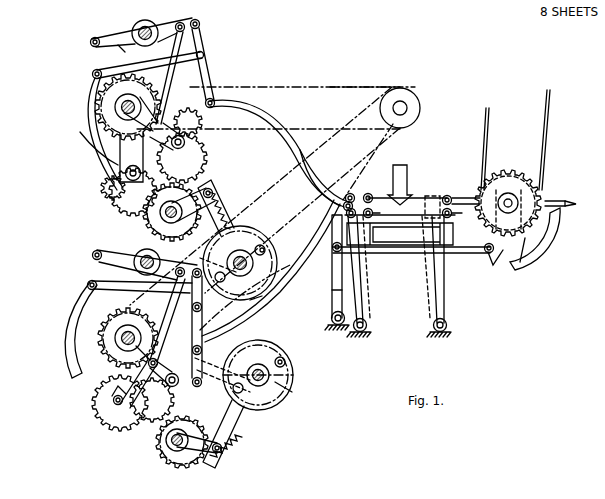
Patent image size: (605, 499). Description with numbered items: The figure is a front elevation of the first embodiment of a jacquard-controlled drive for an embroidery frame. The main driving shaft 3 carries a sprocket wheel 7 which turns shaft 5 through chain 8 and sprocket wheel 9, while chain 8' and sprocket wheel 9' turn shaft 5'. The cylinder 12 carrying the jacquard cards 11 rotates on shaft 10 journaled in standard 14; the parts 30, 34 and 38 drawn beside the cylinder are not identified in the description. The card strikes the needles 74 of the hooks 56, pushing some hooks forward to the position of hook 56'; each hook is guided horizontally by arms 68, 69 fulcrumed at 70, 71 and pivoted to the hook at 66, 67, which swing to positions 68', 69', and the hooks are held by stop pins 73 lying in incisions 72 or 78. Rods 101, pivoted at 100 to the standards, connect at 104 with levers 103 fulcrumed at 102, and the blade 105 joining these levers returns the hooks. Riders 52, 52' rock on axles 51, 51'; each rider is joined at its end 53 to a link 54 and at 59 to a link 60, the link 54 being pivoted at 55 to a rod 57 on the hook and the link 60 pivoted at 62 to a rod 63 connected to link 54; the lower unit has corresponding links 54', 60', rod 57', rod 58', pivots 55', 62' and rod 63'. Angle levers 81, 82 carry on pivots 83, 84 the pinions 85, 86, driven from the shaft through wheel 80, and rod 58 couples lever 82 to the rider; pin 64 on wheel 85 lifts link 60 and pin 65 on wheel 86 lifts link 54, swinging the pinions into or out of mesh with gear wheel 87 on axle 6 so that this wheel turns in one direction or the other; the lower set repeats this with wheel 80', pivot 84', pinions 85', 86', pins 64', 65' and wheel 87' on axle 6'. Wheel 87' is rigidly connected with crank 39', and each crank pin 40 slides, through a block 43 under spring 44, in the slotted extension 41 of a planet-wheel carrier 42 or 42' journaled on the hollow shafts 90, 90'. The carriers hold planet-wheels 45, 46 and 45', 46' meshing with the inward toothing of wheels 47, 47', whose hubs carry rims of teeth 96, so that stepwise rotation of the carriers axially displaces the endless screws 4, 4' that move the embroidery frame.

The main driving shaft 3 is at (408, 106).
The endless screw 4 is at (240, 263).
The endless screw 4' is at (258, 375).
The shaft 5 is at (117, 121).
The shaft 5' is at (117, 370).
The axle 6 is at (180, 205).
The axle 6' is at (184, 457).
The sprocket wheel 7 is at (402, 120).
The chain 8 is at (365, 80).
The chain 8' is at (261, 196).
The sprocket wheel 9 is at (114, 107).
The sprocket wheel 9' is at (124, 334).
The shaft 10 is at (508, 196).
The jacquard cards 11 is at (490, 136).
The cylinder 12 is at (522, 176).
The standard 14 is at (506, 251).
The bracket 30 is at (546, 199).
The curved arm 34 is at (538, 262).
The tip 38 is at (575, 207).
The crank 39' is at (219, 442).
The pin 40 is at (213, 190).
The slotted extension 41 is at (224, 202).
The planet-wheel carrier 42 is at (271, 271).
The planet-wheel carrier 42' is at (298, 385).
The block 43 is at (232, 192).
The spring 44 is at (246, 212).
The planet-wheel 45 is at (218, 285).
The planet-wheel 45' is at (226, 371).
The planet-wheel 46 is at (273, 235).
The planet-wheel 46' is at (294, 352).
The wheel 47 is at (245, 297).
The wheel 47' is at (258, 349).
The axle 51 is at (158, 23).
The axle 51' is at (154, 263).
The rider 52 is at (142, 28).
The rider 52' is at (147, 255).
The end of rider 53 is at (200, 25).
The link 54 is at (211, 64).
The link 54' is at (207, 331).
The pivot 55 is at (302, 90).
The pivot 55' is at (170, 347).
The hook 56 is at (406, 198).
The hook 56' is at (358, 198).
The rod 57 is at (321, 178).
The rod 57' is at (325, 248).
The rod 58 is at (173, 78).
The rod 58' is at (167, 319).
The pivot 59 is at (95, 38).
The link 60 is at (84, 76).
The link 60' is at (74, 286).
The pivot 62 is at (149, 65).
The pivot 62' is at (142, 287).
The rod 63 is at (121, 43).
The rod 63' is at (83, 255).
The pin 64 is at (112, 157).
The pin 64' is at (94, 394).
The pin 65 is at (268, 153).
The pin 65' is at (222, 392).
The pivot 66 is at (384, 212).
The pivot 67 is at (462, 218).
The arm 68 is at (369, 269).
The arm 68' is at (383, 267).
The arm 69 is at (450, 269).
The arm 69' is at (422, 267).
The fulcrum 70 is at (367, 325).
The fulcrum 71 is at (447, 325).
The incision 72 is at (400, 224).
The stop pin 73 is at (406, 176).
The needle 74 is at (464, 196).
The incision 78 is at (445, 196).
The wheel 80 is at (91, 133).
The wheel 80' is at (68, 330).
The angle lever 81 is at (118, 158).
The angle lever 82 is at (192, 116).
The pivot 83 is at (112, 185).
The pivot 84 is at (189, 136).
The pivot 84' is at (164, 373).
The pinion 85 is at (130, 192).
The pinion 85' is at (104, 403).
The pinion 86 is at (192, 158).
The pinion 86' is at (144, 410).
The gear wheel 87 is at (162, 212).
The gear wheel 87' is at (169, 442).
The hollow shaft 90 is at (278, 248).
The hollow shaft 90' is at (298, 365).
The rim of teeth 96 is at (262, 300).
The pivot 100 is at (488, 254).
The rod 101 is at (406, 255).
The fulcrum 102 is at (339, 334).
The lever 103 is at (332, 300).
The pivot 104 is at (332, 270).
The blade 105 is at (342, 205).